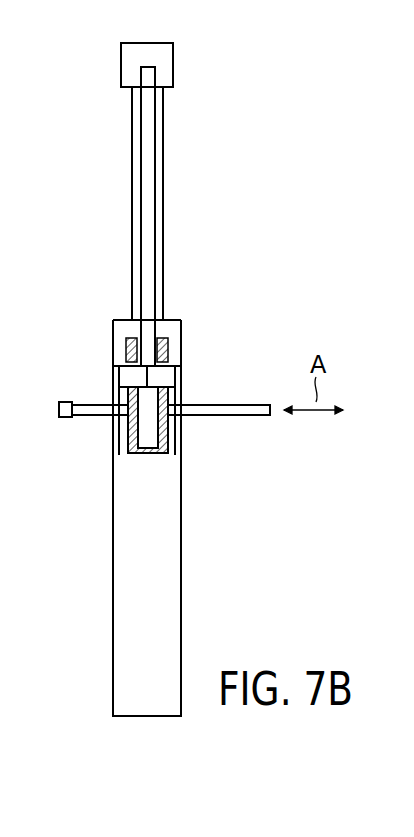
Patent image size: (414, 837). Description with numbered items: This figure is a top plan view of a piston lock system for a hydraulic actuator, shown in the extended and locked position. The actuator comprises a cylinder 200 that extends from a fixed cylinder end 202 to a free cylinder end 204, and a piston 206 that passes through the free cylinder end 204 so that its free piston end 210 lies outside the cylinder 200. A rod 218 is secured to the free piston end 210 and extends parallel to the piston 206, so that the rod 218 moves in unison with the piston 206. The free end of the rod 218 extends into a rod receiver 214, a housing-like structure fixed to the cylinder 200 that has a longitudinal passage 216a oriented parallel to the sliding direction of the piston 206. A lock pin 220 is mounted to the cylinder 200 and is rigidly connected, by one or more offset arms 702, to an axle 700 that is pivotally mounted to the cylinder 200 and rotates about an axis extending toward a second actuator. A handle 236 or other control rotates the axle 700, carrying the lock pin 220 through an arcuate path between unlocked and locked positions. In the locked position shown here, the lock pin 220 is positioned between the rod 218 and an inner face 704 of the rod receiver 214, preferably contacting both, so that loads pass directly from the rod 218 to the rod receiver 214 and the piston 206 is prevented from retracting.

The cylinder 200 is at (133, 612).
The fixed cylinder end 202 is at (146, 716).
The free cylinder end 204 is at (172, 320).
The piston 206 is at (158, 128).
The free piston end 210 is at (147, 55).
The rod receiver 214 is at (166, 438).
The longitudinal passage 216a is at (146, 452).
The rod 218 is at (148, 152).
The lock pin 220 is at (127, 372).
The handle 236 is at (60, 413).
The axle 700 is at (252, 410).
The offset arm 702 is at (115, 385).
The inner face 704 is at (148, 372).